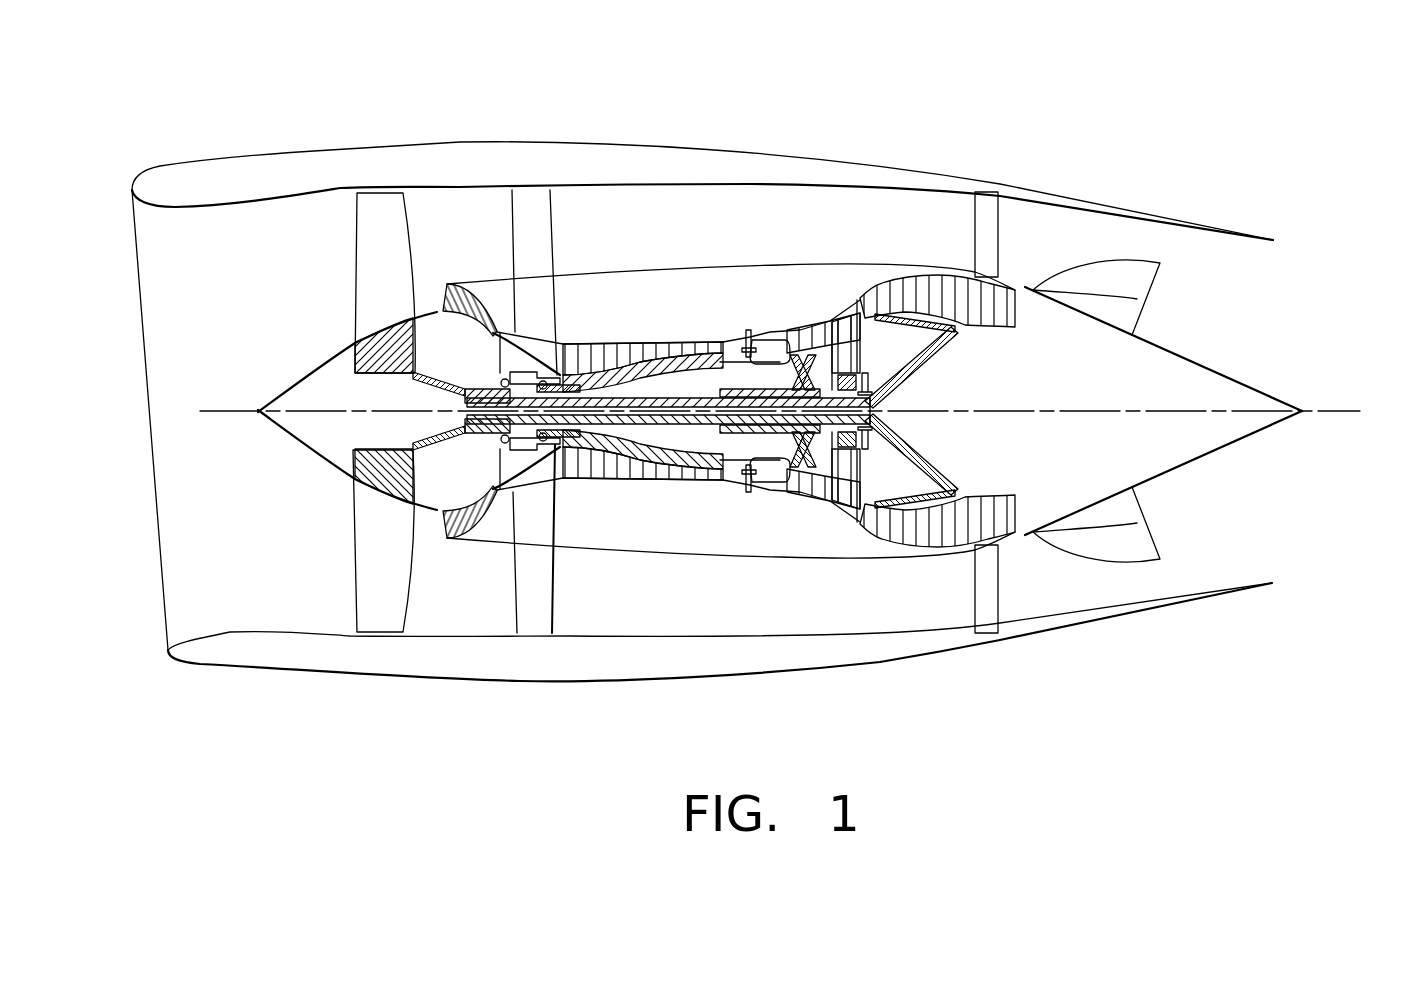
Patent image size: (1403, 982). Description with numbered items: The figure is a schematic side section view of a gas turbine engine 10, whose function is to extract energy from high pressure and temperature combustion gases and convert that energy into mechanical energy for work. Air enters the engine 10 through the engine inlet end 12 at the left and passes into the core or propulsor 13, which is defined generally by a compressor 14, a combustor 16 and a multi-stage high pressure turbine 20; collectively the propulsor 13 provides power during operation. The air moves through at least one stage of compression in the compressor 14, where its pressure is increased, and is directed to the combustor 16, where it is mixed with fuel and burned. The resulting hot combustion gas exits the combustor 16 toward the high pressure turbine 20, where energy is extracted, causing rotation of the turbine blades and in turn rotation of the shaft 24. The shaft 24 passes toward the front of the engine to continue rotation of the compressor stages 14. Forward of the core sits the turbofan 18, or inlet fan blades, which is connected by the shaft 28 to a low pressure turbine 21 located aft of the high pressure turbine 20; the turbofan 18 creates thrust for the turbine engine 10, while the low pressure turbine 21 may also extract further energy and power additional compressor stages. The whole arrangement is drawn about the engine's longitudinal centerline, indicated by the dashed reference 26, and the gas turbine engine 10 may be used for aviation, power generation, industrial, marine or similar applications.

The gas turbine engine 10 is at (1018, 126).
The engine inlet end 12 is at (155, 242).
The propulsor 13 is at (703, 264).
The compressor 14 is at (597, 339).
The combustor 16 is at (767, 330).
The turbofan 18 is at (321, 254).
The multi-stage high pressure turbine 20 is at (822, 320).
The low pressure turbine 21 is at (943, 338).
The shaft 24 is at (733, 468).
The longitudinal centerline axis 26 is at (1363, 408).
The shaft 28 is at (650, 458).